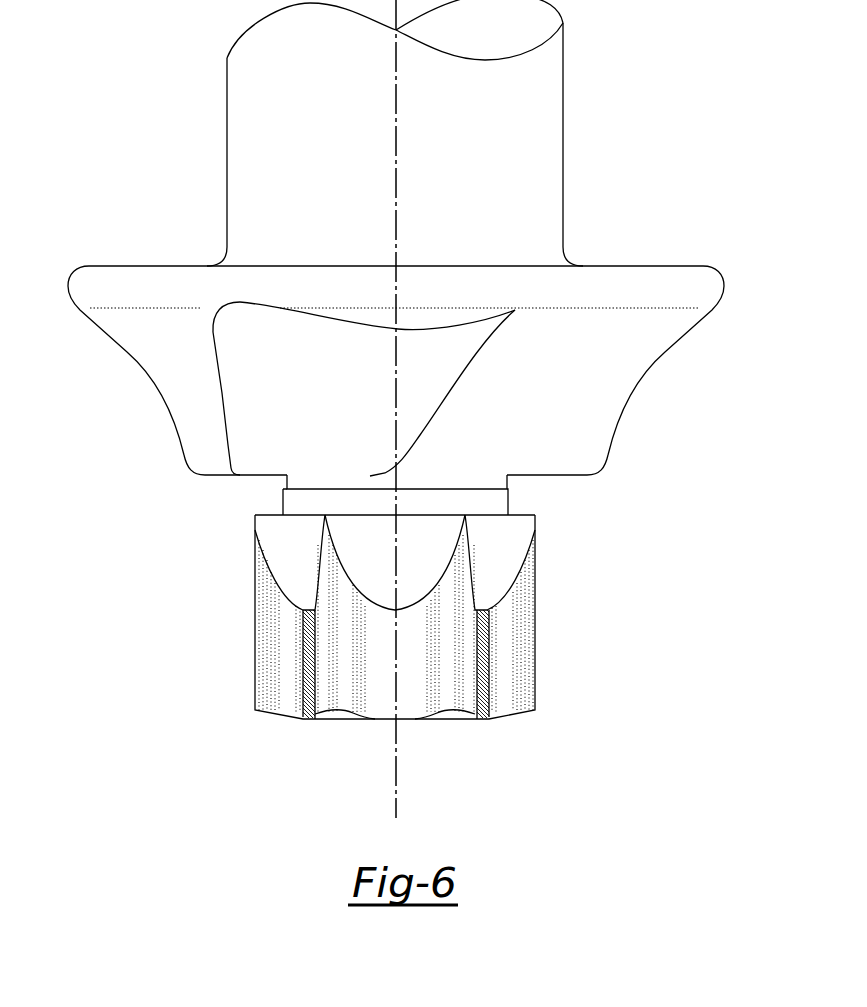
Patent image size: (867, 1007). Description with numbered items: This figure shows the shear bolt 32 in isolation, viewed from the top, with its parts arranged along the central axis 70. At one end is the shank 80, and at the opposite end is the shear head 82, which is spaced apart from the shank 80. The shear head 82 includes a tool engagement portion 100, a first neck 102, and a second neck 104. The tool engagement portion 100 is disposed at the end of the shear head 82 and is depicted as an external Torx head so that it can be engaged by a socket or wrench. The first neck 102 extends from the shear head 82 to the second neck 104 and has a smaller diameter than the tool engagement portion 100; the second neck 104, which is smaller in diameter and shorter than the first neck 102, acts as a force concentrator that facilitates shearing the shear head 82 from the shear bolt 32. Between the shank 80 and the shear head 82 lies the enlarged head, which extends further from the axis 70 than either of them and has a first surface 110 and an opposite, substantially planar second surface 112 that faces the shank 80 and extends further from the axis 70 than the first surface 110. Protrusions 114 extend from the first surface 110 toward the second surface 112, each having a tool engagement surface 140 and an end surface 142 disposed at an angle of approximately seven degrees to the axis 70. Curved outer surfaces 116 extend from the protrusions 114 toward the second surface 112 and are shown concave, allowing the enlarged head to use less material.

The shear bolt 32 is at (148, 120).
The shank 80 is at (227, 88).
The second surface 112 is at (173, 266).
The outer surface 116 is at (130, 350).
The end surface 142 is at (222, 392).
The tool engagement surface 140 is at (358, 397).
The protrusion 114 is at (195, 452).
The second neck 104 is at (287, 482).
The first neck 102 is at (283, 502).
The tool engagement portion 100 is at (262, 619).
The shear head 82 is at (308, 722).
The first surface 110 is at (557, 477).
The axis 70 is at (396, 778).